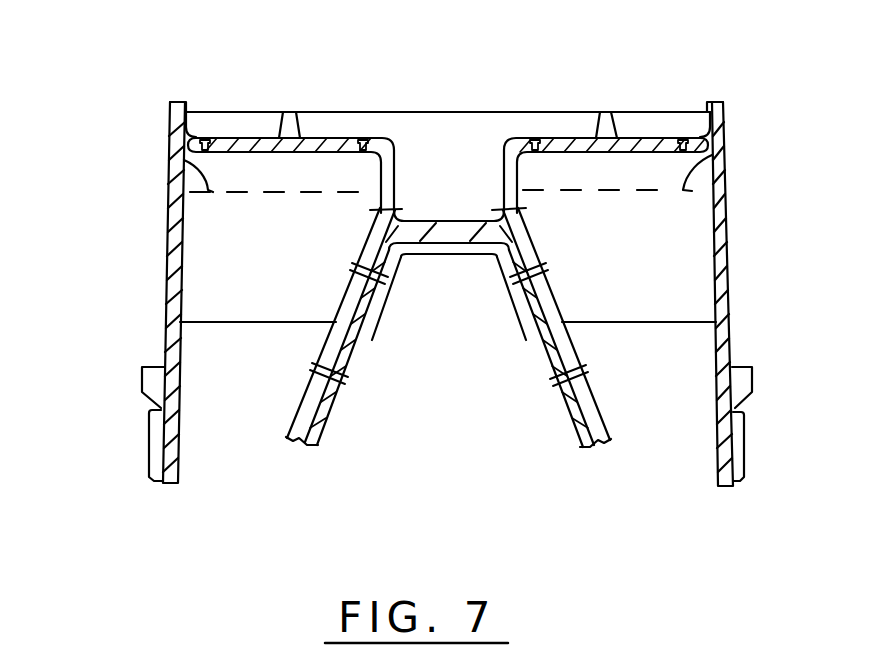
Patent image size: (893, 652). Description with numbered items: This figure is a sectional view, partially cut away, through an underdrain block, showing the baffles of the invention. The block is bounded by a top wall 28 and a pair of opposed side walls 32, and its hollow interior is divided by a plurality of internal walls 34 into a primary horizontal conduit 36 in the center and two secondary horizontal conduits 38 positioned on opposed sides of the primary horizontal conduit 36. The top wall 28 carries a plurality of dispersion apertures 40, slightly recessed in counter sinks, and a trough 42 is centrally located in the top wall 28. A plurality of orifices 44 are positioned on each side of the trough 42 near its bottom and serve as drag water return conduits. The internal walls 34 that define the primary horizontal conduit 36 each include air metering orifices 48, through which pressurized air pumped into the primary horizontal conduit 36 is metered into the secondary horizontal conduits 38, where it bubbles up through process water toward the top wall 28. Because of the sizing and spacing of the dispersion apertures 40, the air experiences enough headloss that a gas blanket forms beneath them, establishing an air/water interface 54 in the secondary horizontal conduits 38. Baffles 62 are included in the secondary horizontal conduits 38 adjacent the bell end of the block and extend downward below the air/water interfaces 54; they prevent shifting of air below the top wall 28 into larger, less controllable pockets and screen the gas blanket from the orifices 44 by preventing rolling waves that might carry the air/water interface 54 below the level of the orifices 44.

The top wall 28 is at (322, 140).
The side walls 32 is at (166, 335).
The internal walls 34 is at (292, 421).
The primary horizontal conduit 36 is at (460, 347).
The secondary horizontal conduits 38 is at (266, 395).
The dispersion apertures 40 is at (192, 141).
The trough 42 is at (464, 187).
The orifices 44 is at (387, 213).
The air metering orifices 48 is at (552, 382).
The air/water interface 54 is at (183, 167).
The baffles 62 is at (230, 262).